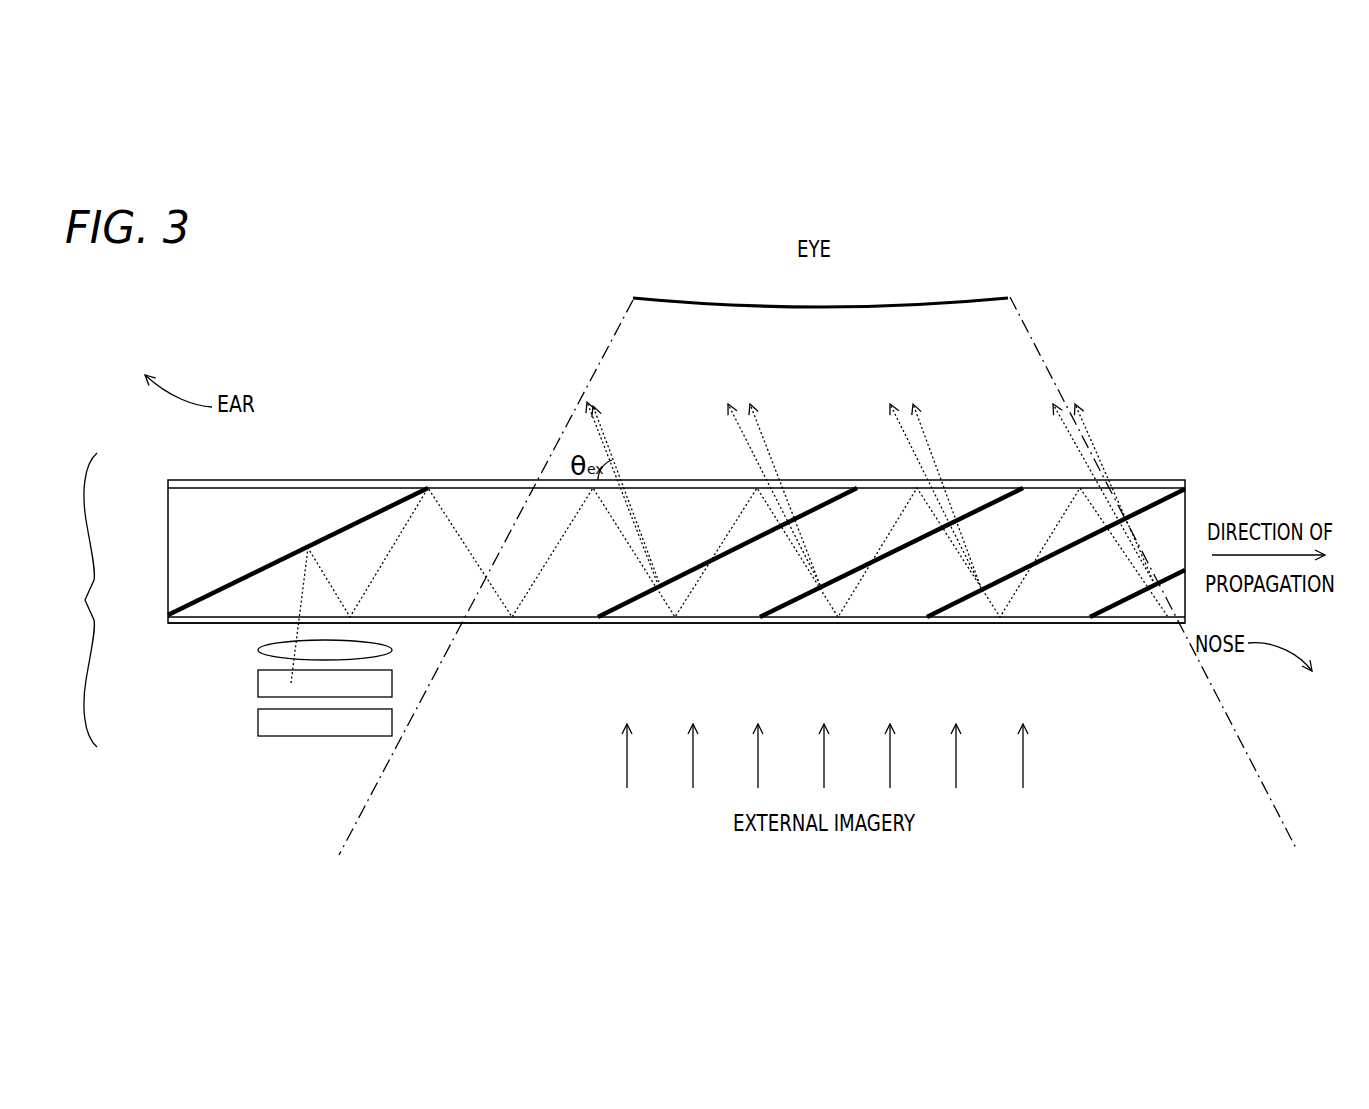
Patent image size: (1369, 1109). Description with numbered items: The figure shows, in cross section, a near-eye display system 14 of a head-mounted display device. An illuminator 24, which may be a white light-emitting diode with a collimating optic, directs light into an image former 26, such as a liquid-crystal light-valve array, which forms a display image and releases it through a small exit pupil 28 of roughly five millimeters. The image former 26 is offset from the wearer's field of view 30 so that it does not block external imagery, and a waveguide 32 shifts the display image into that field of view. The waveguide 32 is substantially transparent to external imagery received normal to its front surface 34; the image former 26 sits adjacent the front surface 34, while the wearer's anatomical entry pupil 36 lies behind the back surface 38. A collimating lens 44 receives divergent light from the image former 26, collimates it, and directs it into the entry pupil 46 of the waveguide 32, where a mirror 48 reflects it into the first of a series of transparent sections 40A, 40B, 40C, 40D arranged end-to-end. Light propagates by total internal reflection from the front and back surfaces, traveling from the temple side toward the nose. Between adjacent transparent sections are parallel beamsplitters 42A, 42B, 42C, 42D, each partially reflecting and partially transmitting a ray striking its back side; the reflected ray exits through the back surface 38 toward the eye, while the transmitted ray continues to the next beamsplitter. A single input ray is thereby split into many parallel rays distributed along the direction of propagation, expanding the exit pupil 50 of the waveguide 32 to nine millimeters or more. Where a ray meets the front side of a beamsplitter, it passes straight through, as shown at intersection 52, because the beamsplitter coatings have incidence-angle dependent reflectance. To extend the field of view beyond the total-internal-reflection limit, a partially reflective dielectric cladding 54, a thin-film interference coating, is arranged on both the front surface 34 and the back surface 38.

The near-eye display system 14 is at (80, 600).
The illuminator 24 is at (258, 725).
The image former 26 is at (258, 685).
The exit pupil 28 is at (324, 676).
The field of view 30 is at (373, 800).
The waveguide 32 is at (1216, 457).
The front surface 34 is at (485, 640).
The anatomical entry pupil 36 is at (923, 306).
The back surface 38 is at (454, 464).
The transparent section 40A is at (596, 609).
The transparent section 40B is at (752, 609).
The transparent section 40C is at (914, 609).
The transparent section 40D is at (1076, 609).
The beamsplitter 42A is at (632, 604).
The beamsplitter 42B is at (795, 603).
The beamsplitter 42C is at (957, 603).
The beamsplitter 42D is at (1118, 603).
The collimating lens 44 is at (258, 650).
The entry pupil 46 is at (287, 605).
The mirror 48 is at (242, 578).
The exit pupil 50 is at (845, 476).
The intersection 52 is at (707, 554).
The partially reflective dielectric cladding 54 is at (343, 483).